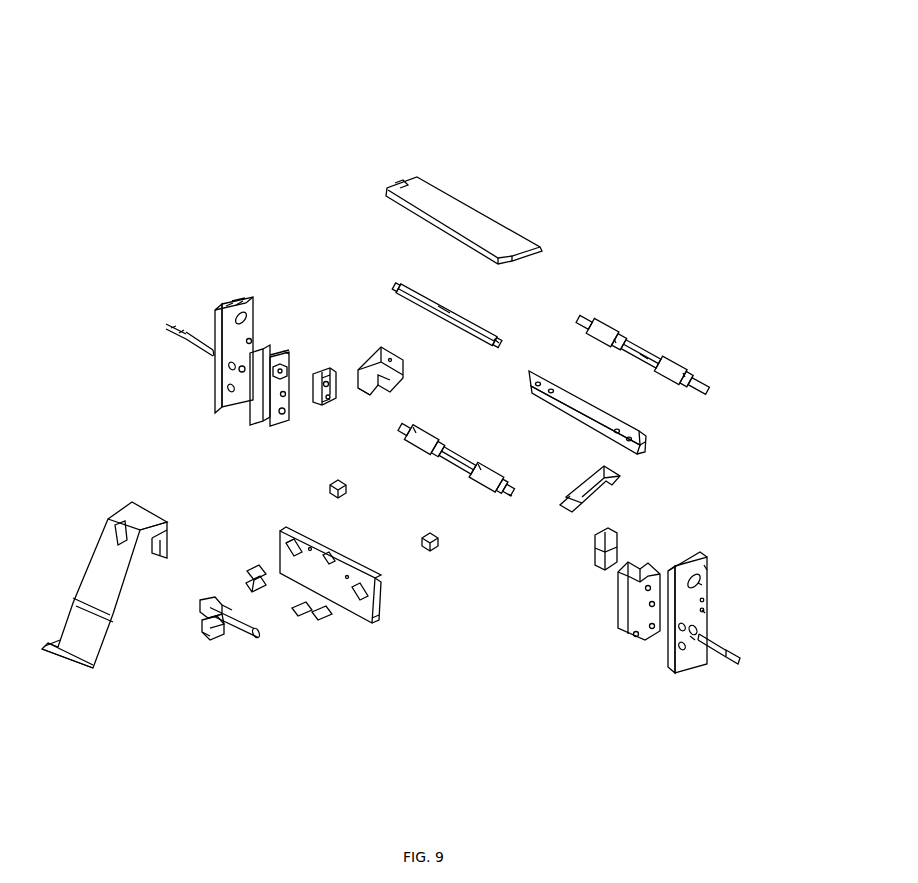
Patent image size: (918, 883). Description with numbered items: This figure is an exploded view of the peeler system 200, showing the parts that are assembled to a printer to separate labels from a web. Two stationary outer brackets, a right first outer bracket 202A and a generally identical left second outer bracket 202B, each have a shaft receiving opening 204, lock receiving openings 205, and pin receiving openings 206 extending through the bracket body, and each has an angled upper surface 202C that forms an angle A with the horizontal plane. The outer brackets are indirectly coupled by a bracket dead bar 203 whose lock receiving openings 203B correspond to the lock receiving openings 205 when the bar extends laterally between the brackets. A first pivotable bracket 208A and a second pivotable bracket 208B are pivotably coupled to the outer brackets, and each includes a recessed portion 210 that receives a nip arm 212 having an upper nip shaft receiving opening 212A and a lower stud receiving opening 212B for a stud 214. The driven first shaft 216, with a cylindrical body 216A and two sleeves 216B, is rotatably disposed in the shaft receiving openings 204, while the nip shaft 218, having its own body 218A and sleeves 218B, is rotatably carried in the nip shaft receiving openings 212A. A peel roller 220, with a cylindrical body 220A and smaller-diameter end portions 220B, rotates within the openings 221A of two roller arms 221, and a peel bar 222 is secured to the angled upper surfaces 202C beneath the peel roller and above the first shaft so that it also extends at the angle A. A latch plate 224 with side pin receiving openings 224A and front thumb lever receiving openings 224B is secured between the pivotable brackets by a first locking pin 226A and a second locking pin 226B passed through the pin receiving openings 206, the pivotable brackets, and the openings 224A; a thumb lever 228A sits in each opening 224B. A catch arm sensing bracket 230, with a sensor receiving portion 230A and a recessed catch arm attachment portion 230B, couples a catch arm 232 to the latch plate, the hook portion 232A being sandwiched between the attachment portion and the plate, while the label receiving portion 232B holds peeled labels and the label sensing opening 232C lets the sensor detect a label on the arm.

The peeler system 200 is at (368, 92).
The first outer bracket 202A is at (711, 571).
The second outer bracket 202B is at (219, 299).
The angled upper surface 202C is at (698, 556).
The bracket dead bar 203 is at (646, 441).
The lock receiving openings 203B is at (641, 455).
The shaft receiving opening 204 is at (698, 586).
The lock receiving openings 205 is at (707, 612).
The pin receiving openings 206 is at (693, 639).
The first pivotable bracket 208A is at (633, 638).
The second pivotable bracket 208B is at (278, 409).
The recessed portion 210 is at (286, 355).
The nip arm 212 is at (317, 372).
The nip shaft receiving opening 212A is at (328, 377).
The stud receiving opening 212B is at (334, 405).
The stud 214 is at (432, 548).
The first shaft 216 is at (644, 331).
The first shaft body 216A is at (654, 351).
The sleeves 216B is at (624, 330).
The nip shaft 218 is at (446, 461).
The nip shaft body 218A is at (511, 498).
The sleeves 218B is at (427, 430).
The peel roller 220 is at (477, 317).
The peel roller cylindrical body 220A is at (443, 311).
The peel roller end portions 220B is at (501, 345).
The roller arm 221 is at (375, 344).
The roller arm opening 221A is at (369, 400).
The peel bar 222 is at (543, 250).
The latch plate 224 is at (353, 614).
The pin receiving openings 224A is at (381, 621).
The thumb lever receiving openings 224B is at (284, 548).
The first locking pin 226A is at (727, 662).
The second locking pin 226B is at (172, 328).
The thumb lever 228A is at (322, 621).
The catch arm sensing bracket 230 is at (218, 643).
The sensor receiving portion 230A is at (204, 632).
The recessed catch arm attachment portion 230B is at (229, 603).
The catch arm 232 is at (83, 570).
The hook portion 232A is at (172, 537).
The label receiving portion 232B is at (63, 672).
The label sensing opening 232C is at (122, 534).
The angle A is at (241, 301).